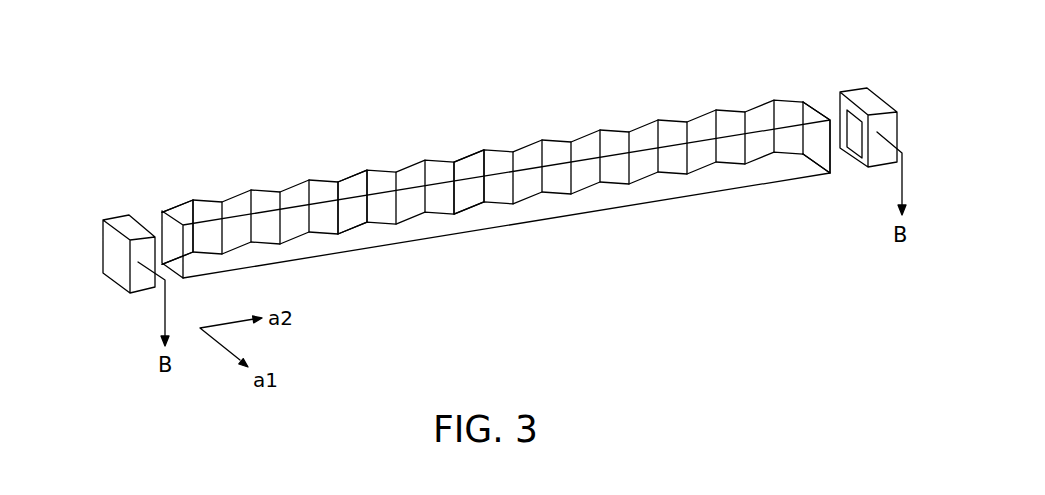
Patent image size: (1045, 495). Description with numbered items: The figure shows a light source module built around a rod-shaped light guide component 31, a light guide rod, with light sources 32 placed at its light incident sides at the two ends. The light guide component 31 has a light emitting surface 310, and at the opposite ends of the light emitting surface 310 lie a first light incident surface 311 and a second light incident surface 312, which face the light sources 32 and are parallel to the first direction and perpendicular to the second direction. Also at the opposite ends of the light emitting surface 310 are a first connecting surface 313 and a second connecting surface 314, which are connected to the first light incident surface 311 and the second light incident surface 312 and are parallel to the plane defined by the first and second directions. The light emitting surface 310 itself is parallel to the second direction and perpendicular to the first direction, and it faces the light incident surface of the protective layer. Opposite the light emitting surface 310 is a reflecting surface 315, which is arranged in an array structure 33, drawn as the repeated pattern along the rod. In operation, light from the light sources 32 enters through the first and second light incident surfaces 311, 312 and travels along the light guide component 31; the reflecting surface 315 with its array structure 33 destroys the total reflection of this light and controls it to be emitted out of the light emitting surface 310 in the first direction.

The light guide component 31 is at (720, 97).
The light emitting surface 310 is at (597, 192).
The first light incident surface 311 is at (175, 205).
The second light incident surface 312 is at (817, 138).
The first connecting surface 313 is at (360, 187).
The second connecting surface 314 is at (373, 237).
The reflecting surface 315 is at (470, 153).
The light source 32 is at (116, 210).
The array structure 33 is at (617, 122).